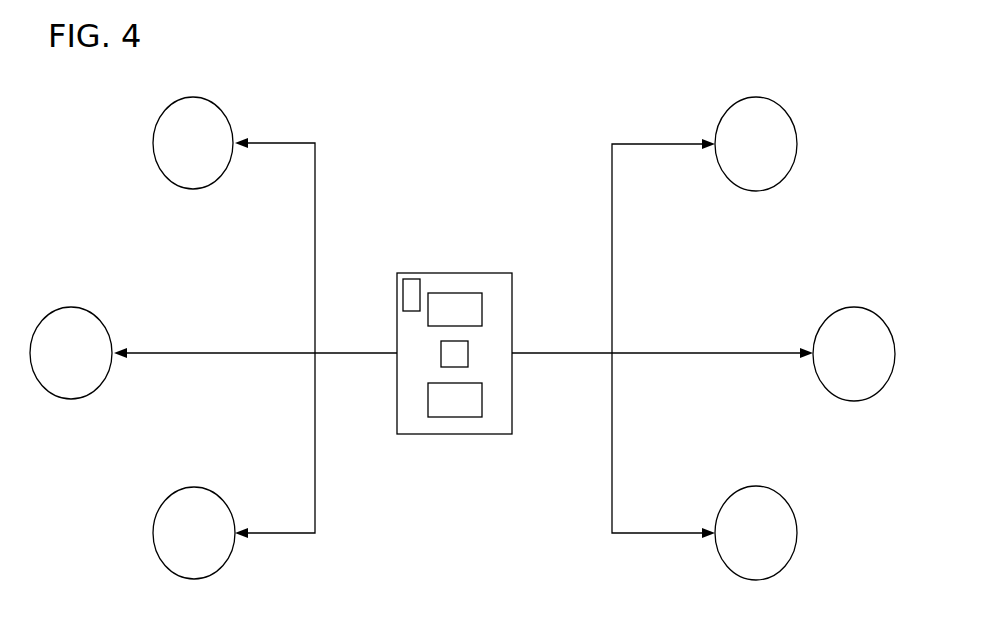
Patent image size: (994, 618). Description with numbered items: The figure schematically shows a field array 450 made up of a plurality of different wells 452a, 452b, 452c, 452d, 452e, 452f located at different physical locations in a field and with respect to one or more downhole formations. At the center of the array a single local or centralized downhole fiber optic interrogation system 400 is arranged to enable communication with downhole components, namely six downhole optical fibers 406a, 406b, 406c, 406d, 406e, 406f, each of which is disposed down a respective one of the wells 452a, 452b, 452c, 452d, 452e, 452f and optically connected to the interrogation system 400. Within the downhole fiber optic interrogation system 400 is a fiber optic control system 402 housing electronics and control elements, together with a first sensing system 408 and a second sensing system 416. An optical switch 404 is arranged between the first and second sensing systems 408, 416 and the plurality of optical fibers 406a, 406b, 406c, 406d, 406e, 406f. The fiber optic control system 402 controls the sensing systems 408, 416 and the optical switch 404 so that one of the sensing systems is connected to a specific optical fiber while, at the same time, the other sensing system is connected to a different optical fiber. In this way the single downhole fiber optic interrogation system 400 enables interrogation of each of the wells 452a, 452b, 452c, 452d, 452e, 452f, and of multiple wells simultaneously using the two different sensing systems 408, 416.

The downhole fiber optic interrogation system 400 is at (521, 271).
The fiber optic control system 402 is at (412, 295).
The optical switch 404 is at (457, 354).
The first sensing system 408 is at (452, 303).
The second sensing system 416 is at (452, 402).
The optical fiber 406a is at (316, 226).
The optical fiber 406b is at (238, 355).
The optical fiber 406c is at (316, 512).
The optical fiber 406d is at (612, 228).
The optical fiber 406e is at (685, 358).
The optical fiber 406f is at (611, 499).
The field array 450 is at (68, 142).
The well 452a is at (217, 115).
The well 452b is at (87, 322).
The well 452c is at (215, 507).
The well 452d is at (782, 132).
The well 452e is at (877, 332).
The well 452f is at (783, 517).